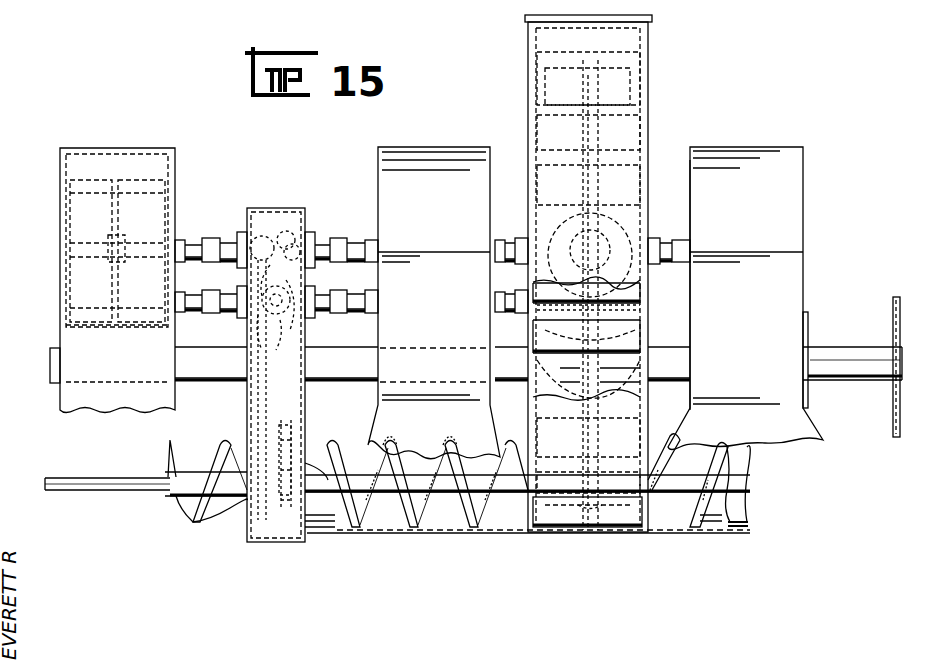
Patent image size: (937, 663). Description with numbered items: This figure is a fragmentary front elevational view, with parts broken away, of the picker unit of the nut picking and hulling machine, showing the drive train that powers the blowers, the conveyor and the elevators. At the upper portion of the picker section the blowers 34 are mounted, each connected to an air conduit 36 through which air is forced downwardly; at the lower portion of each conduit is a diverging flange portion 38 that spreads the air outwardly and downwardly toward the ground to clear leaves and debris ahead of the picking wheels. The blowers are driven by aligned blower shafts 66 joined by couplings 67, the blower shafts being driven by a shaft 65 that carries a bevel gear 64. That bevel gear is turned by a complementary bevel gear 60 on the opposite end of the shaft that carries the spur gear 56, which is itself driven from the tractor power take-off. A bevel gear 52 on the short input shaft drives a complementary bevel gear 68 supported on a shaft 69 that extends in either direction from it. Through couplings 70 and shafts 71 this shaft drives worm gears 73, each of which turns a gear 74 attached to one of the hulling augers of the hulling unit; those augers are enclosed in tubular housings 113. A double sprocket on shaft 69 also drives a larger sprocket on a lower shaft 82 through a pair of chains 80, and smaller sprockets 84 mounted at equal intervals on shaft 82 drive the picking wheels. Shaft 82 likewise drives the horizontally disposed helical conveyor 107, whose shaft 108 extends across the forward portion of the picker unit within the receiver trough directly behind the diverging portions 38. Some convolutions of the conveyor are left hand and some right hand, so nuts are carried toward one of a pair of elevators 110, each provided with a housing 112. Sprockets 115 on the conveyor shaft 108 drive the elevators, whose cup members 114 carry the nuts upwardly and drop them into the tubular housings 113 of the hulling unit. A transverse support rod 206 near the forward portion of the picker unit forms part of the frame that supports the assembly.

The blower 34 is at (85, 205).
The air conduit 36 is at (803, 284).
The diverging flange portion 38 is at (385, 432).
The bevel gear 52 is at (272, 286).
The spur gear 56 is at (288, 232).
The bevel gear 60 is at (262, 240).
The bevel gear 64 is at (298, 240).
The shaft 65 is at (228, 243).
The blower shaft 66 is at (58, 243).
The coupling 67 is at (211, 238).
The bevel gear 68 is at (291, 335).
The shaft 69 is at (228, 304).
The coupling 70 is at (336, 307).
The shaft 71 is at (368, 296).
The worm gear 73 is at (612, 320).
The gear 74 is at (625, 240).
The chain 80 is at (268, 392).
The shaft 82 is at (130, 484).
The sprocket 84 is at (283, 500).
The helical conveyor 107 is at (417, 512).
The shaft 108 is at (185, 488).
The elevator 110 is at (600, 443).
The housing 112 is at (650, 50).
The tubular housing 113 is at (570, 248).
The cup member 114 is at (633, 122).
The sprocket 115 is at (592, 520).
The transverse support rod 206 is at (50, 358).